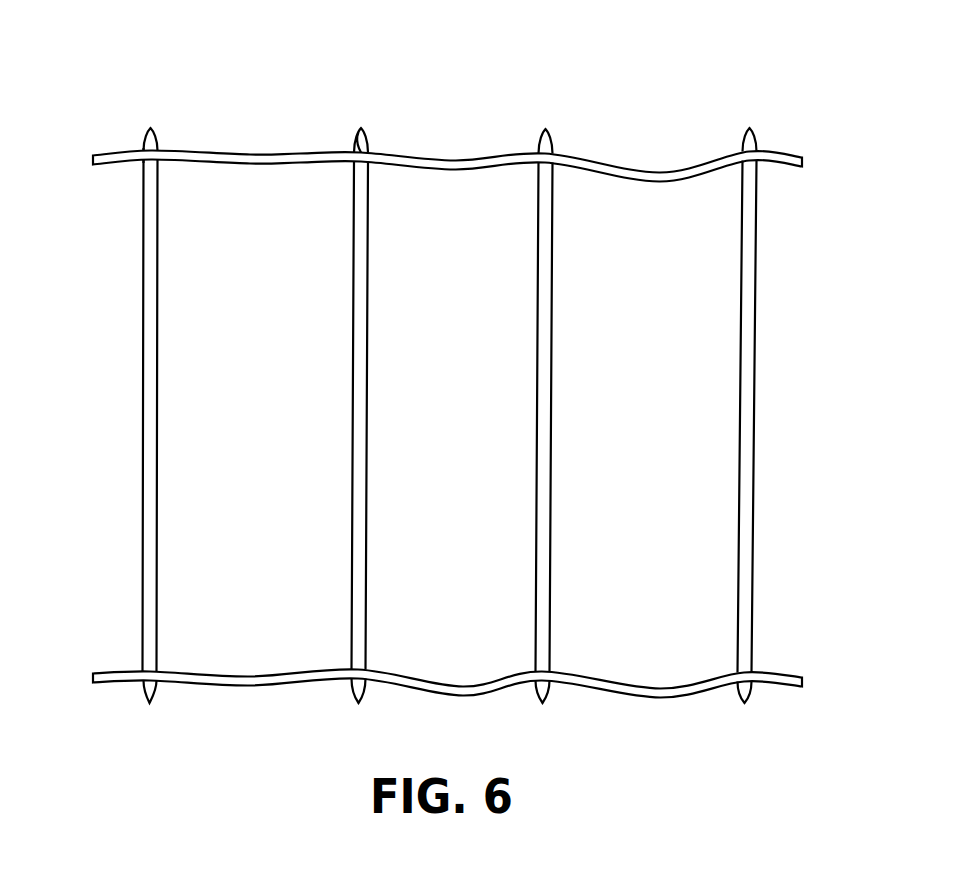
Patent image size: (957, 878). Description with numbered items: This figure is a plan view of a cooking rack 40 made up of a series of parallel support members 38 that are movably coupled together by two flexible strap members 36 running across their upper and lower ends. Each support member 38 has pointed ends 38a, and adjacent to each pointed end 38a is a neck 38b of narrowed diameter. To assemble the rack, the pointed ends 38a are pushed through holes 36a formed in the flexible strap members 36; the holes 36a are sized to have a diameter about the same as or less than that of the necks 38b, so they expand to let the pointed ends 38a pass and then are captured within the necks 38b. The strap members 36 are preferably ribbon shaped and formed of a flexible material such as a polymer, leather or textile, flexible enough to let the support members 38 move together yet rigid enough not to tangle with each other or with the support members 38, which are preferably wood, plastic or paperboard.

The flexible strap member 36 is at (245, 156).
The hole 36a is at (141, 163).
The support member 38 is at (150, 368).
The pointed end 38a is at (151, 130).
The neck 38b is at (141, 150).
The cooking rack 40 is at (433, 352).